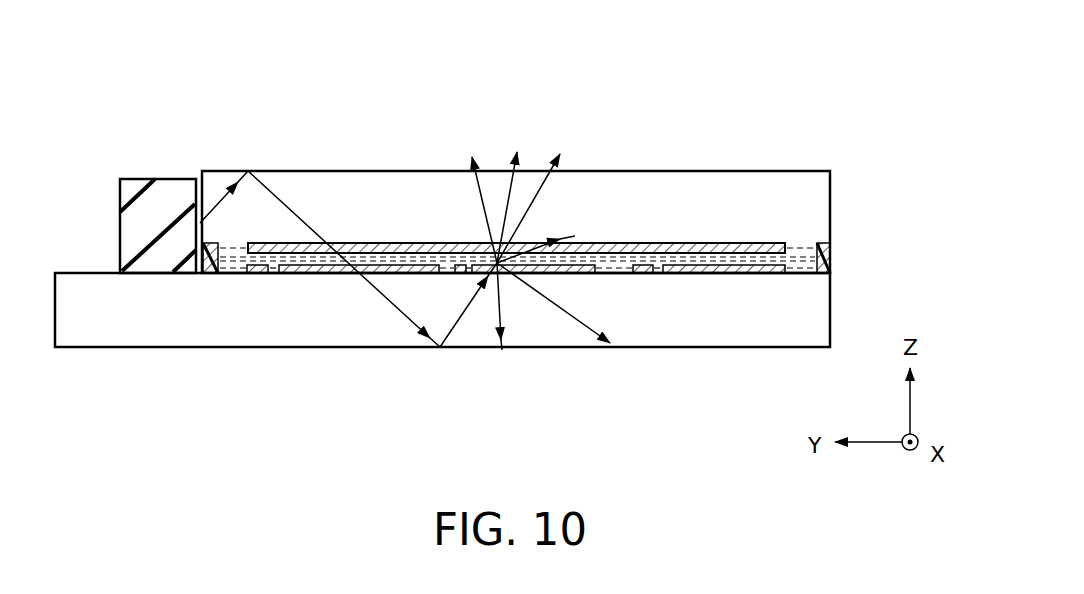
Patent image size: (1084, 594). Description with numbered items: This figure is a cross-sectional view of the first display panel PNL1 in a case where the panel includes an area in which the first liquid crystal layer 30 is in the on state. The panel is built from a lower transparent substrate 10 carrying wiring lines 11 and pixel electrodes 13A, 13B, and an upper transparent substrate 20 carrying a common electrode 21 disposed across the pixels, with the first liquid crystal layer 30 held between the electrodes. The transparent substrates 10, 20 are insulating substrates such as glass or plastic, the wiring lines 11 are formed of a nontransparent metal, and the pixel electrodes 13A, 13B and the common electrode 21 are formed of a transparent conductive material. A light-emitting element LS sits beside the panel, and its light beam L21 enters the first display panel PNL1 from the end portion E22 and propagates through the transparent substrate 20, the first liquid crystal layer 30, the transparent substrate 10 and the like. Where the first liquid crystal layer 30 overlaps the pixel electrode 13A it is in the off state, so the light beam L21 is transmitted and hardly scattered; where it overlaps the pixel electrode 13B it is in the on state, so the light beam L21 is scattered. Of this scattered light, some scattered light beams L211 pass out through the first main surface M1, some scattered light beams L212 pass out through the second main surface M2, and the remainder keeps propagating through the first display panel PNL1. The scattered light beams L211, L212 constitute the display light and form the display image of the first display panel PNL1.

The transparent substrate 10 is at (167, 338).
The wiring lines 11 is at (255, 283).
The pixel electrode 13A is at (300, 275).
The pixel electrode 13B is at (550, 270).
The transparent substrate 20 is at (712, 185).
The common electrode 21 is at (773, 243).
The first liquid crystal layer 30 is at (810, 262).
The first display panel PNL1 is at (830, 171).
The light-emitting element LS is at (120, 232).
The end portion E22 is at (196, 200).
The light beam L21 is at (221, 199).
The scattered light beams L211 is at (505, 312).
The scattered light beams L212 is at (518, 227).
The first main surface M1 is at (740, 350).
The second main surface M2 is at (642, 171).